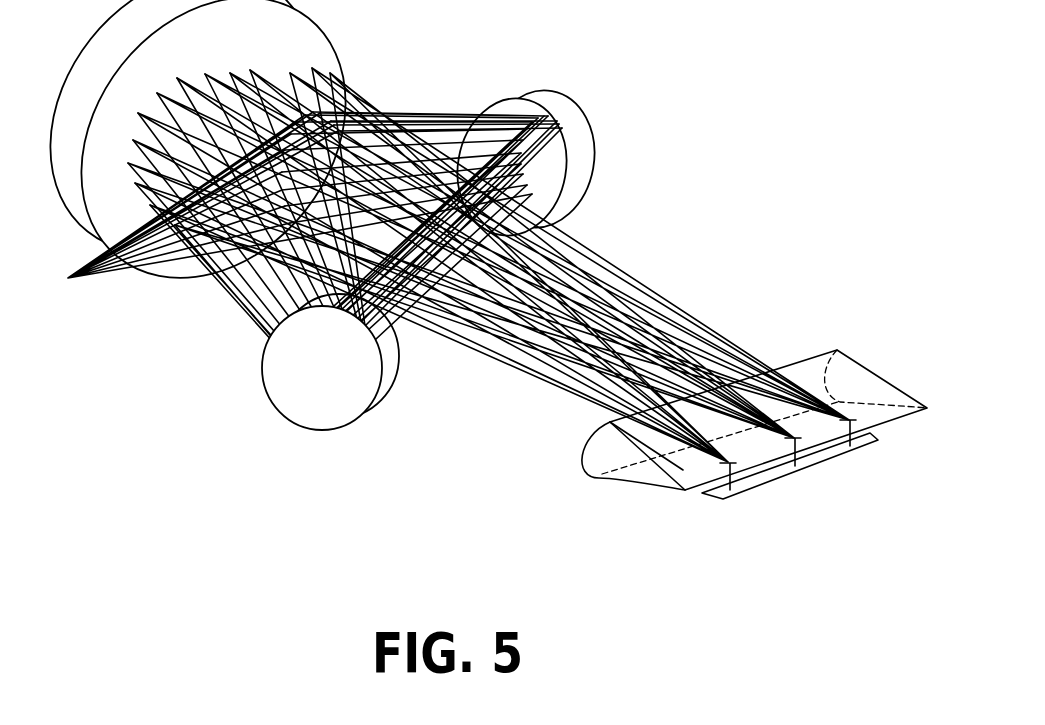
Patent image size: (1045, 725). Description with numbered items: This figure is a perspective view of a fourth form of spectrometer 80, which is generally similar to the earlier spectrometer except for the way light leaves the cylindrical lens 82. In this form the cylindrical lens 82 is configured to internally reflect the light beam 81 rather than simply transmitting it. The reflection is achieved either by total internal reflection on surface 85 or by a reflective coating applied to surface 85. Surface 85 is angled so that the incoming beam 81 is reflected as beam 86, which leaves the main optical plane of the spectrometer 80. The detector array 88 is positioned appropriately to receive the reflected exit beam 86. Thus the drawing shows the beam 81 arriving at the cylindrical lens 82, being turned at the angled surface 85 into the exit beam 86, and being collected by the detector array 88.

The spectrometer 80 is at (424, 231).
The light beam 81 is at (692, 300).
The cylindrical lens 82 is at (880, 363).
The surface 85 is at (681, 477).
The reflected exit beam 86 is at (730, 489).
The detector array 88 is at (816, 456).